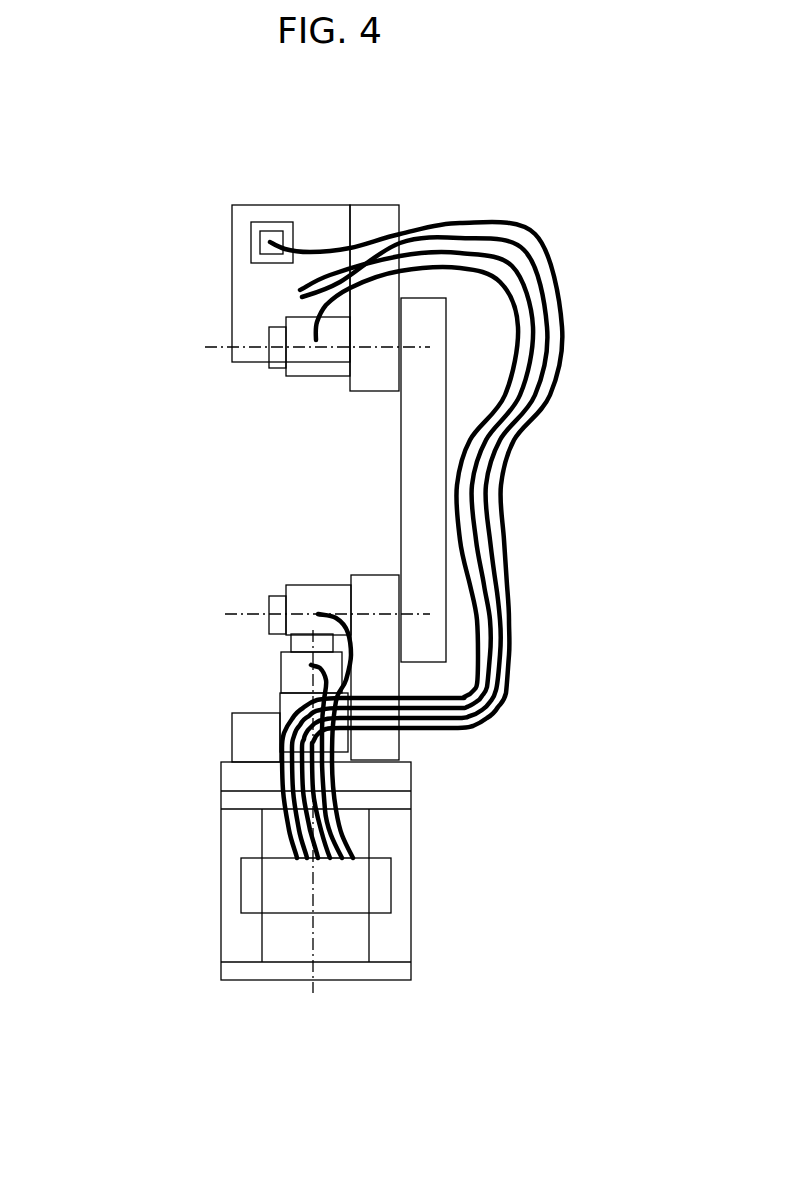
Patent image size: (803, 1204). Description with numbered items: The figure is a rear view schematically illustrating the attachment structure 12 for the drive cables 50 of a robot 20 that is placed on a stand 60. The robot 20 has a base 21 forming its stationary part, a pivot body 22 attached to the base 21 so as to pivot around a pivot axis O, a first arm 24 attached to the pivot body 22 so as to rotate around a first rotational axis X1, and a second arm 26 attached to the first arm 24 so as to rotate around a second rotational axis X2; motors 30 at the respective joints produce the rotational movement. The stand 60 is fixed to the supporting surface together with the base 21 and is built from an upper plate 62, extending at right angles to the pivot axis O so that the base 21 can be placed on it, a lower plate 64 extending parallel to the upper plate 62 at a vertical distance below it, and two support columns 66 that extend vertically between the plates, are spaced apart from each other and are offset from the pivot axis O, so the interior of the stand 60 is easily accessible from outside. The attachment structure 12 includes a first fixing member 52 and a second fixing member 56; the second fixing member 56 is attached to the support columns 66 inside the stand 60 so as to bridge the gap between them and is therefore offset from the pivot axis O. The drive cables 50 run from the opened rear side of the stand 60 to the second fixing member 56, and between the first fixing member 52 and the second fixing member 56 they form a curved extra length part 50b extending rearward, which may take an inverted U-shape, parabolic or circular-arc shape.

The attachment structure 12 is at (167, 865).
The robot 20 is at (203, 315).
The base 21 is at (232, 750).
The pivot body 22 is at (372, 575).
The first arm 24 is at (400, 468).
The second arm 26 is at (358, 205).
The motor 30 is at (277, 222).
The drive cables 50 is at (462, 548).
The extra length part 50b is at (345, 785).
The first fixing member 52 is at (280, 728).
The second fixing member 56 is at (373, 882).
The stand 60 is at (428, 857).
The upper plate 62 is at (221, 800).
The lower plate 64 is at (412, 971).
The support columns 66 is at (221, 845).
The first rotational axis X1 is at (243, 614).
The second rotational axis X2 is at (222, 350).
The pivot axis O is at (313, 942).